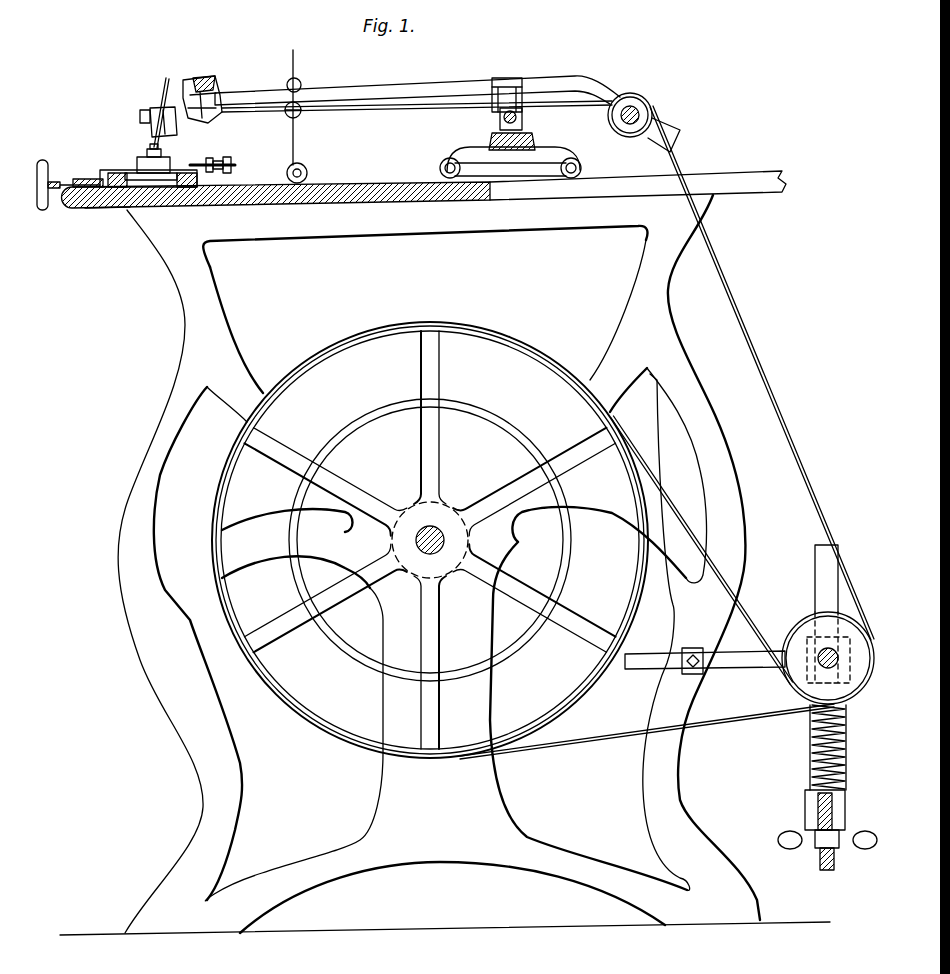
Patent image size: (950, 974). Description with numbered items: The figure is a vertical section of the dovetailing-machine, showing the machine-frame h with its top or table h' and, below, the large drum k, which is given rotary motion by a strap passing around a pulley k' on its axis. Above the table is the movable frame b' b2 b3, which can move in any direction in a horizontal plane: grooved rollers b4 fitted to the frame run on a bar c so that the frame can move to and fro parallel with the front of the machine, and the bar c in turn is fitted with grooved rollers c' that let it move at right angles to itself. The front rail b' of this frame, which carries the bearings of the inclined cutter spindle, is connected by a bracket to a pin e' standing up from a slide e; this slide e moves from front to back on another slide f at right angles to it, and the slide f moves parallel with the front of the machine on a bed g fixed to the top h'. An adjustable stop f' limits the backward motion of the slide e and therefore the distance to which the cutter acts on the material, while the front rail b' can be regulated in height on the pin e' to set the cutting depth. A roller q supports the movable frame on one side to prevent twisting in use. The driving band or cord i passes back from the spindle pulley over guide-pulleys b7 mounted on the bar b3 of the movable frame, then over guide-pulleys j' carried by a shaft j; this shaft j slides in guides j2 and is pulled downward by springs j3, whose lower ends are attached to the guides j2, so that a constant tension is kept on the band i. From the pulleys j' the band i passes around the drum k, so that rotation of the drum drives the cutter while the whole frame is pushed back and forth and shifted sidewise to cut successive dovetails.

The front rail b' is at (201, 89).
The side bar of movable frame b2 is at (417, 86).
The bar of movable frame b3 is at (640, 112).
The grooved rollers b4 is at (522, 90).
The guide-pulleys b7 is at (637, 93).
The bar c is at (499, 129).
The grooved rollers c' is at (508, 160).
The slide e is at (148, 157).
The pin e' is at (157, 110).
The slide f is at (147, 169).
The adjustable stop f' is at (220, 158).
The bed g is at (170, 208).
The machine-frame h is at (439, 564).
The top or table h' is at (105, 223).
The band or cord i is at (548, 430).
The shaft j is at (722, 675).
The guide-pulleys j' is at (828, 658).
The guides j2 is at (825, 560).
The springs j3 is at (827, 743).
The drum k is at (430, 540).
The pulley k' is at (430, 538).
The roller q is at (301, 172).